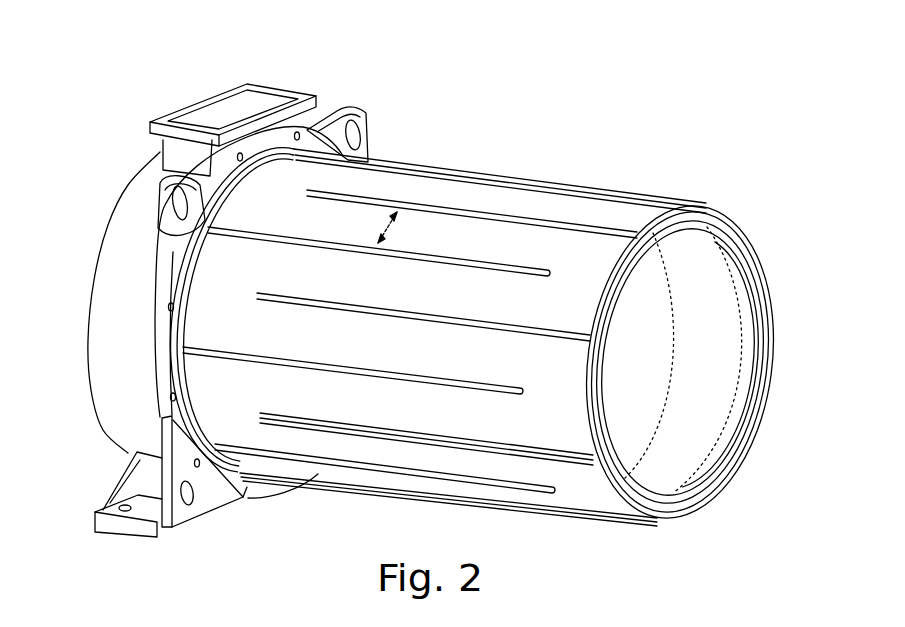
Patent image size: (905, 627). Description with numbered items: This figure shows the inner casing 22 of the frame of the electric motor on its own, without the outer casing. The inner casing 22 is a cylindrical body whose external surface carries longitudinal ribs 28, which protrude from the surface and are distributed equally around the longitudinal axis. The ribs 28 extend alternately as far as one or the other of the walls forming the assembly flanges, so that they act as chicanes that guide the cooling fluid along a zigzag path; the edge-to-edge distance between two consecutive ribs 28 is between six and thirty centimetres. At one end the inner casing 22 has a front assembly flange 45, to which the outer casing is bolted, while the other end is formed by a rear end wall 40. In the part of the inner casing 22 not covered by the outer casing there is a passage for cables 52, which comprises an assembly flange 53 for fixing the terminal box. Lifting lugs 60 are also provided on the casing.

The inner casing 22 is at (498, 348).
The longitudinal ribs 28 is at (612, 225).
The rear end wall 40 is at (740, 470).
The front assembly flange 45 is at (300, 147).
The passage for cables 52 is at (175, 143).
The assembly flange of the terminal box 53 is at (150, 120).
The lifting lugs 60 is at (352, 110).